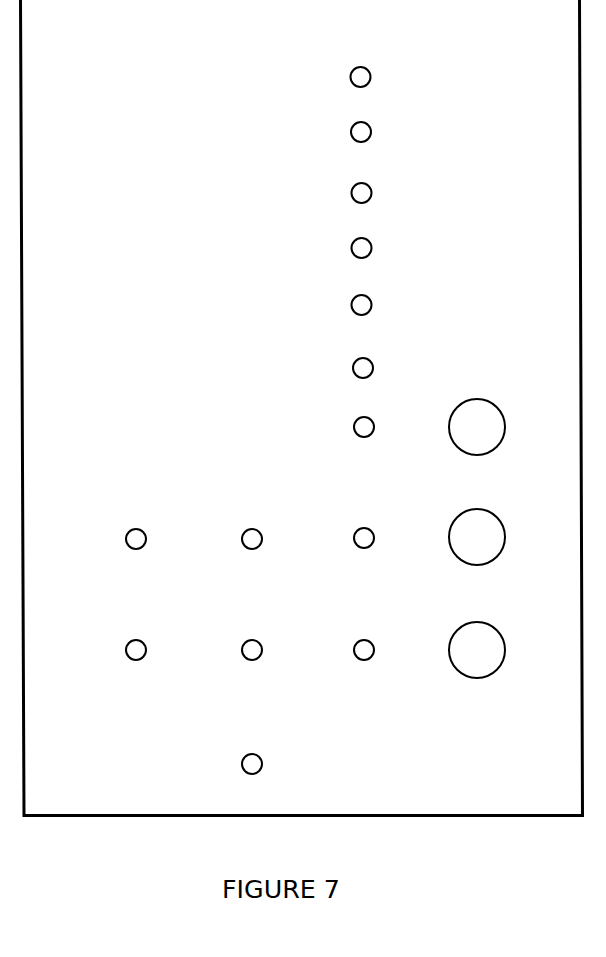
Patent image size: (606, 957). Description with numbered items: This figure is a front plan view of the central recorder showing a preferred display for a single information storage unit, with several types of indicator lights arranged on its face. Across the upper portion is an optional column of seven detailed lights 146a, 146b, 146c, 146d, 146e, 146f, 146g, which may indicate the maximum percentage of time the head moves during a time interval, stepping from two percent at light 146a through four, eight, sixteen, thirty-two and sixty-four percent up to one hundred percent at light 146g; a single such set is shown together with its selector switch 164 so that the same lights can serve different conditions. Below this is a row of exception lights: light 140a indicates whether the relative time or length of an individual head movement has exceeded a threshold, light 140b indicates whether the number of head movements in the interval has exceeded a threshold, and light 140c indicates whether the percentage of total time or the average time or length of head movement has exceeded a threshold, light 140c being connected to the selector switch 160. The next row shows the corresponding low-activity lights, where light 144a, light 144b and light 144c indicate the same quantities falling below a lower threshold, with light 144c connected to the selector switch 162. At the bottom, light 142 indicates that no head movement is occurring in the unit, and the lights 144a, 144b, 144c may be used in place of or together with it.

The light 146a is at (372, 420).
The light 146b is at (373, 368).
The light 146c is at (372, 305).
The light 146d is at (372, 248).
The light 146e is at (372, 193).
The light 146f is at (371, 132).
The light 146g is at (371, 77).
The light 140a is at (143, 547).
The light 140b is at (259, 547).
The light 140c is at (371, 546).
The light 144a is at (143, 658).
The light 144b is at (259, 658).
The light 144c is at (371, 658).
The light 142 is at (259, 772).
The selector switch 160 is at (497, 557).
The selector switch 162 is at (497, 670).
The selector switch 164 is at (497, 447).